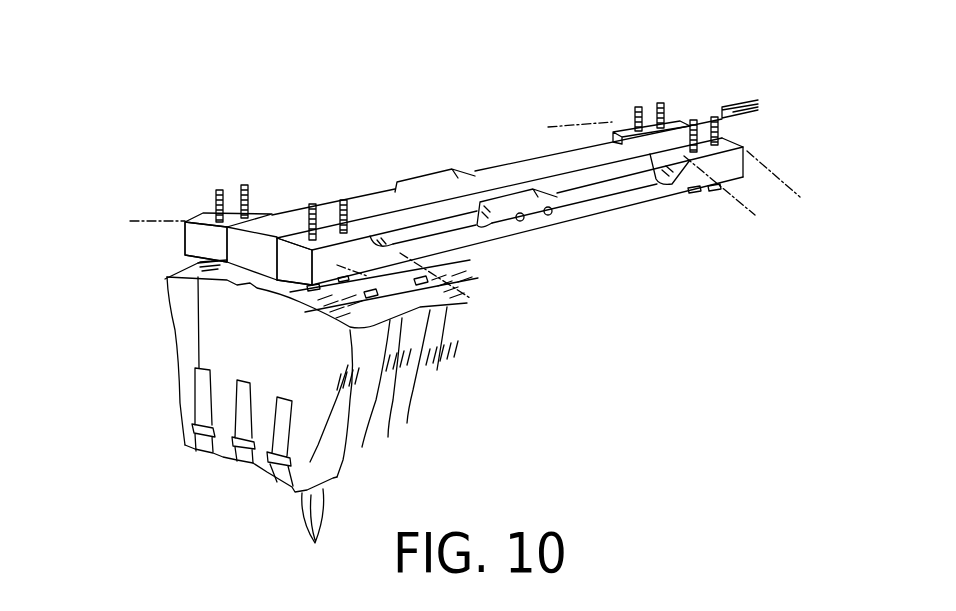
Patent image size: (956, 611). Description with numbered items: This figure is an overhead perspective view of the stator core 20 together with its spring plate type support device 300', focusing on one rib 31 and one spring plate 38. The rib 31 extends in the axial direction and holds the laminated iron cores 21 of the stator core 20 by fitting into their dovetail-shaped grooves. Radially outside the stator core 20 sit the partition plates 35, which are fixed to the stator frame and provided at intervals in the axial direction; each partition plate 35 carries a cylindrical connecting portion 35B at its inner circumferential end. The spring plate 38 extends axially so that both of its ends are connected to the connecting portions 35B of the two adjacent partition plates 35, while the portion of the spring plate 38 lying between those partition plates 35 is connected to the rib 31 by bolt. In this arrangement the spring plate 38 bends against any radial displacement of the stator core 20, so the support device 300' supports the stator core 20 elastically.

The axial rib 31 is at (500, 180).
The spring plate 38 is at (430, 174).
The connecting portion 35B is at (270, 204).
The partition plate 35 is at (467, 171).
The stator core 20 is at (162, 318).
The laminated iron core 21 is at (315, 532).
The support device 300' is at (188, 254).